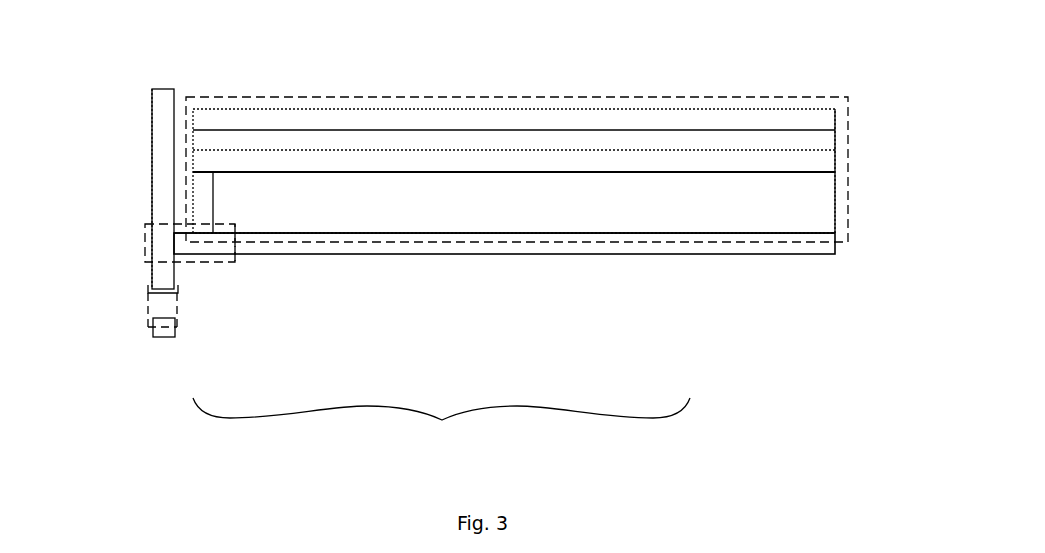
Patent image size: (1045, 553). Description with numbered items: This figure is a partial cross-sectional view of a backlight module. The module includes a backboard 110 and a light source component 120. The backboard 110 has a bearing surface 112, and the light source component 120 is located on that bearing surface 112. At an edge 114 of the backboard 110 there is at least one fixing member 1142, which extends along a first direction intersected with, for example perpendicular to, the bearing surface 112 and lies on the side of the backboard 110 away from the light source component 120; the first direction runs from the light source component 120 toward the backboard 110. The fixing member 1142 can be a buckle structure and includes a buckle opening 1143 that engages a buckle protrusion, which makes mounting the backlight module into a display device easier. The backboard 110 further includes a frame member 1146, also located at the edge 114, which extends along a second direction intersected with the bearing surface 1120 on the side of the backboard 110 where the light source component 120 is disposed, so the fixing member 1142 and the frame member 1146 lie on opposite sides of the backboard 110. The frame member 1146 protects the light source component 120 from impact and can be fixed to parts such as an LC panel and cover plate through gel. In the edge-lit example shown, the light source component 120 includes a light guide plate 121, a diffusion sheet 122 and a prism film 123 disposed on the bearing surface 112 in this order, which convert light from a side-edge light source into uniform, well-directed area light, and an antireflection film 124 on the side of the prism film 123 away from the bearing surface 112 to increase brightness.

The backboard 110 is at (441, 432).
The bearing surface 112 is at (504, 315).
The edge of the backboard 114 is at (305, 311).
The light source component 120 is at (517, 133).
The light guide plate 121 is at (567, 194).
The diffusion sheet 122 is at (567, 132).
The prism film 123 is at (567, 102).
The antireflection film 124 is at (567, 127).
The bearing surface 1120 is at (504, 315).
The fixing member 1142 is at (218, 311).
The buckle opening 1143 is at (150, 285).
The frame member 1146 is at (320, 253).